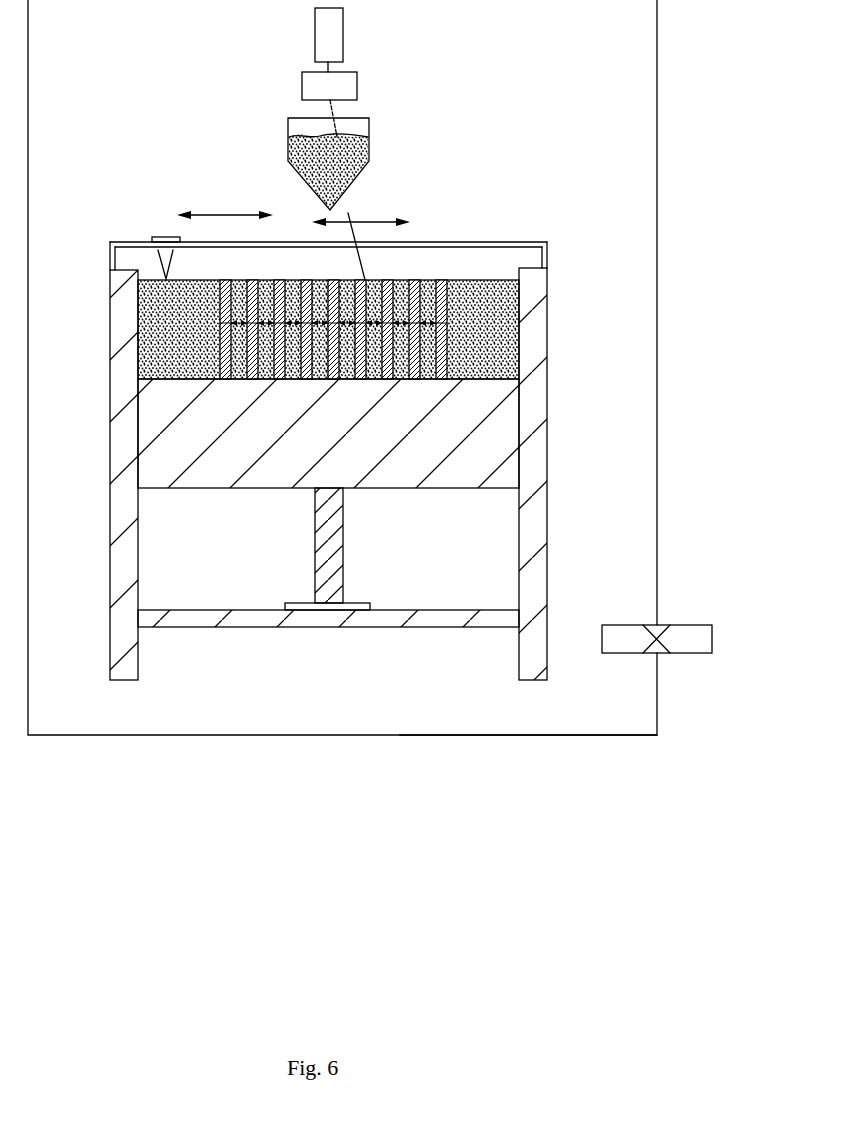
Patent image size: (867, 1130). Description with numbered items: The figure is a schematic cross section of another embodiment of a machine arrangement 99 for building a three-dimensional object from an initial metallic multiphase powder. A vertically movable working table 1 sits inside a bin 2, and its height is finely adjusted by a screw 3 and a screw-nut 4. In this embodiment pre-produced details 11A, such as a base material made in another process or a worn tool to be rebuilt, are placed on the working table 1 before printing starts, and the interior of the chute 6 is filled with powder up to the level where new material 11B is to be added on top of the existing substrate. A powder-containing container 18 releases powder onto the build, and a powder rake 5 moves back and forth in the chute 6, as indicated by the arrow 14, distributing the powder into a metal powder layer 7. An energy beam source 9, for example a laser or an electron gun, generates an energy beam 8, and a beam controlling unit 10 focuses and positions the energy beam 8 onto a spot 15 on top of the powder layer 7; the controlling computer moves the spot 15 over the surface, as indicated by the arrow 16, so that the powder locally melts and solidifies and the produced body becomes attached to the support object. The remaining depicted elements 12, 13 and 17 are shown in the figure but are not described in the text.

The working table 1 is at (150, 432).
The bin 2 is at (533, 448).
The screw 3 is at (328, 555).
The screw-nut 4 is at (297, 605).
The powder rake 5 is at (165, 248).
The chute 6 is at (480, 241).
The metal powder layer 7 is at (135, 326).
The energy beam 8 is at (350, 211).
The energy beam source 9 is at (313, 33).
The beam controlling unit 10 is at (312, 92).
The pre-produced details 11A is at (316, 320).
The new material 11B is at (267, 293).
The chamber 12 is at (342, 409).
The valve 13 is at (693, 637).
The arrow 14 is at (225, 202).
The spot 15 is at (328, 316).
The arrow 16 is at (361, 207).
The chamber interior 17 is at (422, 713).
The powder-containing container 18 is at (370, 128).
The machine arrangement 99 is at (100, 872).